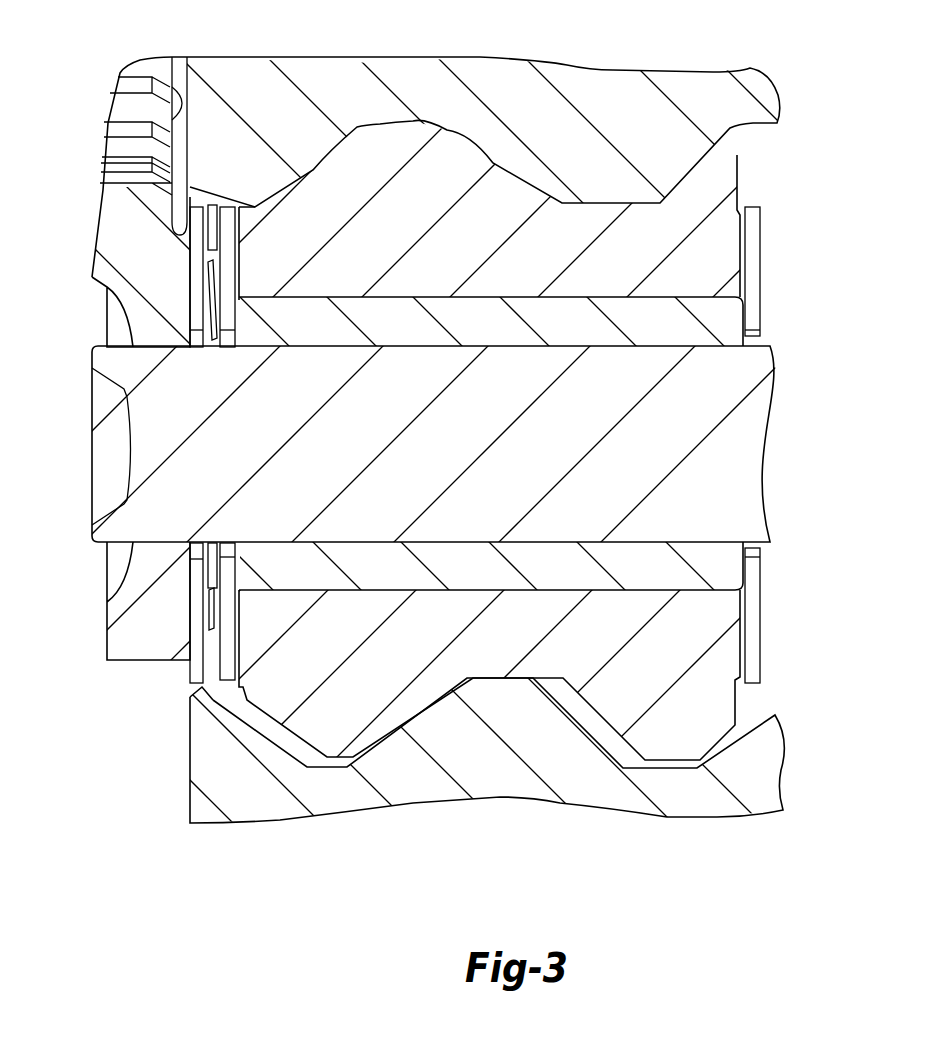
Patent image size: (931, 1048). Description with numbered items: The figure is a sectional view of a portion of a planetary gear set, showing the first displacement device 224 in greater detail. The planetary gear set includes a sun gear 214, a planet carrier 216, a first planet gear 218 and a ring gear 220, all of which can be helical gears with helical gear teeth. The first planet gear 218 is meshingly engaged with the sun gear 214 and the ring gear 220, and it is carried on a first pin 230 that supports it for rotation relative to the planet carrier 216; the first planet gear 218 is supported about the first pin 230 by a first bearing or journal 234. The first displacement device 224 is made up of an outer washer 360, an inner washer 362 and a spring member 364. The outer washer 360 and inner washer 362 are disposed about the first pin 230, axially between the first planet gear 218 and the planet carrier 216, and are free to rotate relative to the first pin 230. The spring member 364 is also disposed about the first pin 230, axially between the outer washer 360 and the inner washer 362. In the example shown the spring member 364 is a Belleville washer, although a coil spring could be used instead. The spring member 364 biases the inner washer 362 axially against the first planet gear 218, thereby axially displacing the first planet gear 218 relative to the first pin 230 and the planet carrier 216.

The sun gear 214 is at (589, 86).
The planet carrier 216 is at (143, 243).
The first planet gear 218 is at (715, 670).
The ring gear 220 is at (483, 770).
The first displacement device 224 is at (211, 686).
The first pin 230 is at (735, 477).
The first bearing or journal 234 is at (690, 333).
The outer washer 360 is at (193, 641).
The inner washer 362 is at (228, 648).
The spring member 364 is at (207, 598).